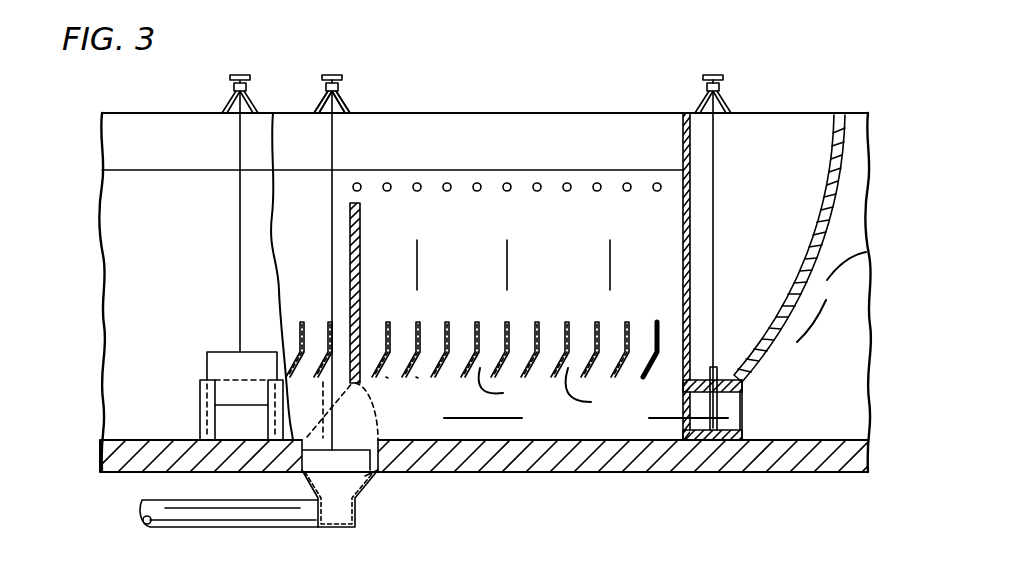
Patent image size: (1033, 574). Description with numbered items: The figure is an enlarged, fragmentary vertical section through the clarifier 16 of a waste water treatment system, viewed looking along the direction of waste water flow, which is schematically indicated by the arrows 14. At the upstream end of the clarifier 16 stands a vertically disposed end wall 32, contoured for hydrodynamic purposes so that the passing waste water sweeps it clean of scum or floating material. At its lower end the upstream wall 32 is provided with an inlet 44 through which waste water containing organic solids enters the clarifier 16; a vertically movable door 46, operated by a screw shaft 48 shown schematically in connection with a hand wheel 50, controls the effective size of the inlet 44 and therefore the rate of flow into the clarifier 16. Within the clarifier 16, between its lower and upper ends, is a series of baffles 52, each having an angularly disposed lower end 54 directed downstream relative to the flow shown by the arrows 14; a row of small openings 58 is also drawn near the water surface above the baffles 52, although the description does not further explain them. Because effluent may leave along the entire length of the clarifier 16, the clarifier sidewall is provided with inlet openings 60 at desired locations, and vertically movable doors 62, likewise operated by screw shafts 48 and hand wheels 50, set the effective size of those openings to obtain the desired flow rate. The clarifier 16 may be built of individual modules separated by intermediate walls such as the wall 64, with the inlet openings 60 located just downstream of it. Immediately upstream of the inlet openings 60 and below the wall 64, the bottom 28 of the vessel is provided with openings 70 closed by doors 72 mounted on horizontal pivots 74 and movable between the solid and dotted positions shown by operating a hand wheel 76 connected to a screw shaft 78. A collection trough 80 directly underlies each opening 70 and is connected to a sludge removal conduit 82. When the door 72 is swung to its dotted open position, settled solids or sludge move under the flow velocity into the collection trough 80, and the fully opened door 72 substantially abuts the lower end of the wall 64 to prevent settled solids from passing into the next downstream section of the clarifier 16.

The arrows 14 is at (768, 408).
The clarifier 16 is at (143, 190).
The bottom 28 is at (550, 455).
The end wall 32 is at (842, 216).
The inlet 44 is at (745, 400).
The door 46 is at (716, 367).
The screw shaft 48 is at (233, 108).
The hand wheel 50 is at (243, 75).
The baffles 52 is at (418, 322).
The lower end 54 is at (418, 378).
The nozzle openings 58 is at (387, 183).
The inlet openings 60 is at (210, 420).
The doors 62 is at (226, 352).
The intermediate wall 64 is at (362, 236).
The openings 70 is at (366, 478).
The door 72 is at (358, 474).
The horizontal pivot 74 is at (306, 436).
The hand wheel 76 is at (334, 75).
The screw shaft 78 is at (342, 106).
The collection trough 80 is at (362, 502).
The sludge removal conduit 82 is at (218, 498).